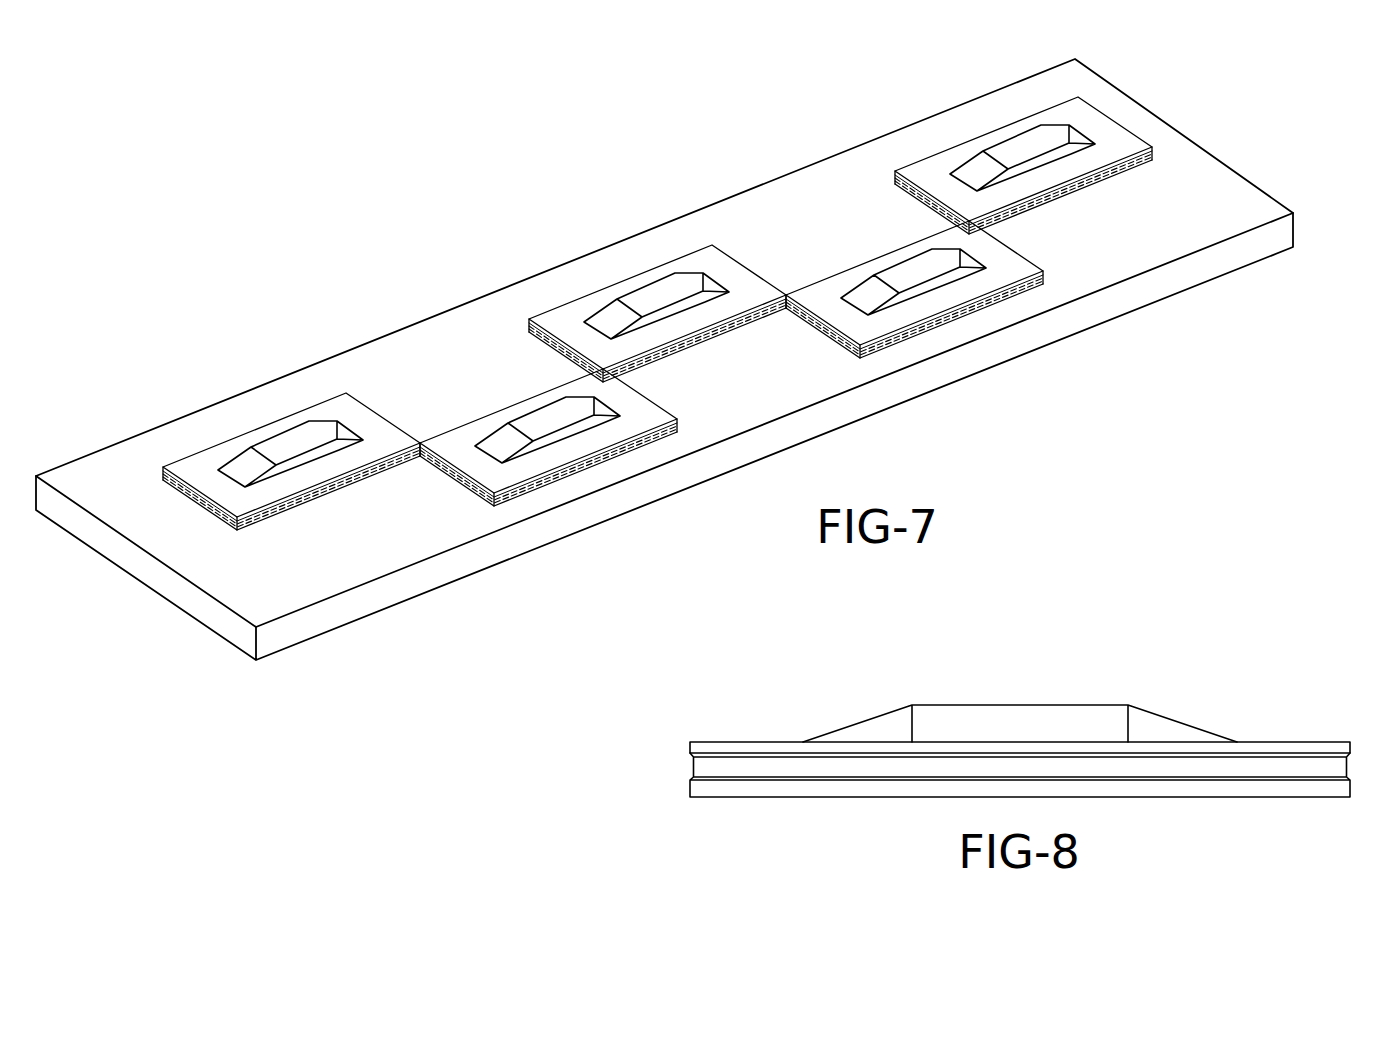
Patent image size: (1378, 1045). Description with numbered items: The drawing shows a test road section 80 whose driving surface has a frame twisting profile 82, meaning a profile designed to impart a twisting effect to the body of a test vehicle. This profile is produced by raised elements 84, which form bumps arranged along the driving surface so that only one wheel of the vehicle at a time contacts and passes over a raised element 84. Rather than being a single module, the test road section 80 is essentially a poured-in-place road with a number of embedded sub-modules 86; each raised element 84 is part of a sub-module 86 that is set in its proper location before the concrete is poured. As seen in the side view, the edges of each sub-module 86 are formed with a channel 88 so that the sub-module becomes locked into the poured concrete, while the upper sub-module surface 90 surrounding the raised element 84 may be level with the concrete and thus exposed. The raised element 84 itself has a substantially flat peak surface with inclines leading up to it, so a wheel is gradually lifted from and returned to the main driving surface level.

In FIG. 7, the test road section 80 is at (353, 182).
In FIG. 7, the frame twisting profile 82 is at (503, 322).
In FIG. 7, the raised element 84 is at (277, 447).
In FIG. 8, the raised element 84 is at (1020, 700).
In FIG. 7, the sub-module 86 is at (742, 252).
In FIG. 8, the sub-module 86 is at (1203, 700).
In FIG. 7, the channel 88 is at (665, 433).
In FIG. 8, the channel 88 is at (703, 767).
In FIG. 8, the upper sub-module surface 90 is at (764, 742).